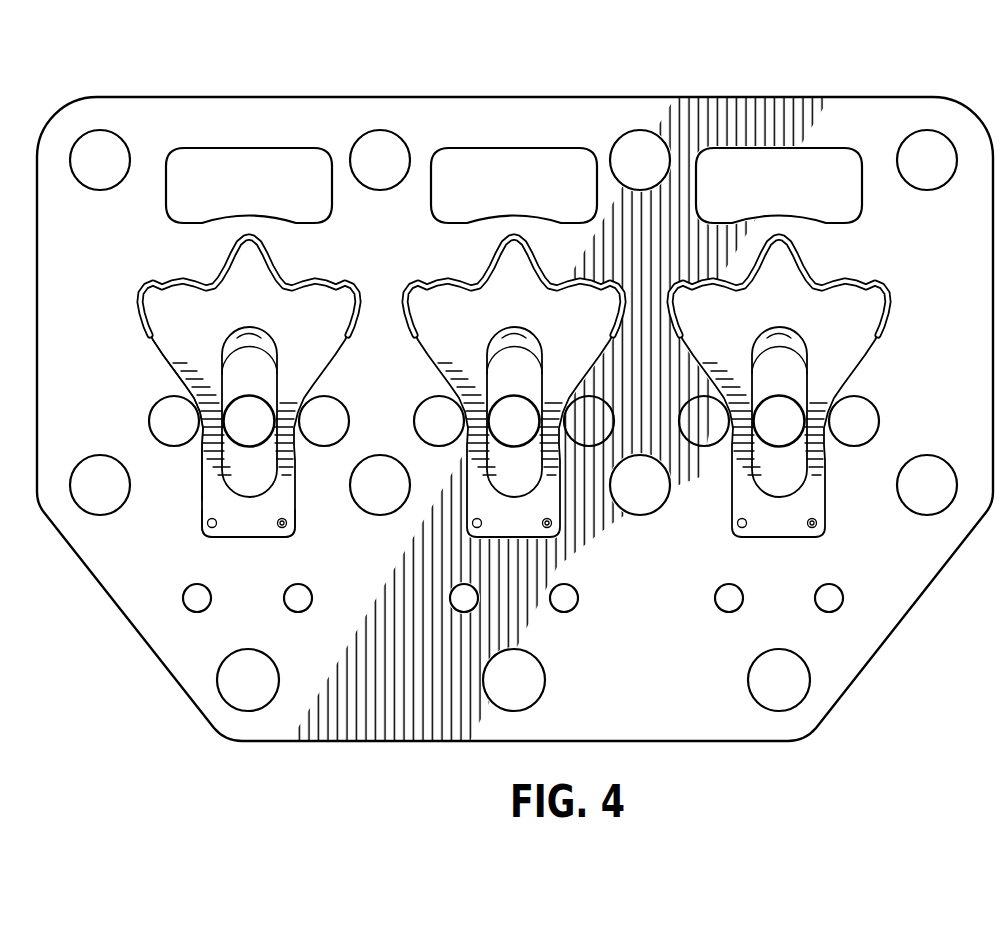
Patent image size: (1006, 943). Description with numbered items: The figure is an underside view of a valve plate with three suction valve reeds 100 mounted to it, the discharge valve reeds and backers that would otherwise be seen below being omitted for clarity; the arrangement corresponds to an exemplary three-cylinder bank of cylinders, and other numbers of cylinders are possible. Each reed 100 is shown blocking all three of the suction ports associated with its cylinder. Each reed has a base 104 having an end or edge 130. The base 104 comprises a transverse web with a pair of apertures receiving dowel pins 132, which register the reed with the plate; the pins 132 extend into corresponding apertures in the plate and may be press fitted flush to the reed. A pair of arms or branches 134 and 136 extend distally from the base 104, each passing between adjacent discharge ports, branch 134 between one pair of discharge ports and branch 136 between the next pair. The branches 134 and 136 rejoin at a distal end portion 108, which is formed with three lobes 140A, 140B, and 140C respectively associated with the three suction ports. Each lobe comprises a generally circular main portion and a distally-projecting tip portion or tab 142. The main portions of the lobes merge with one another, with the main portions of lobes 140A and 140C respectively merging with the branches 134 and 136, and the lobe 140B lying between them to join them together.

The suction valve reed 100 is at (321, 382).
The base 104 is at (256, 517).
The distal end portion 108 is at (235, 287).
The end/edge 130 is at (234, 539).
The dowel pins 132 is at (288, 523).
The arm or branch 134 is at (200, 466).
The arm or branch 136 is at (283, 473).
The lobe 140A is at (181, 323).
The lobe 140B is at (261, 279).
The lobe 140C is at (319, 323).
The tip portion or tab 142 is at (156, 291).